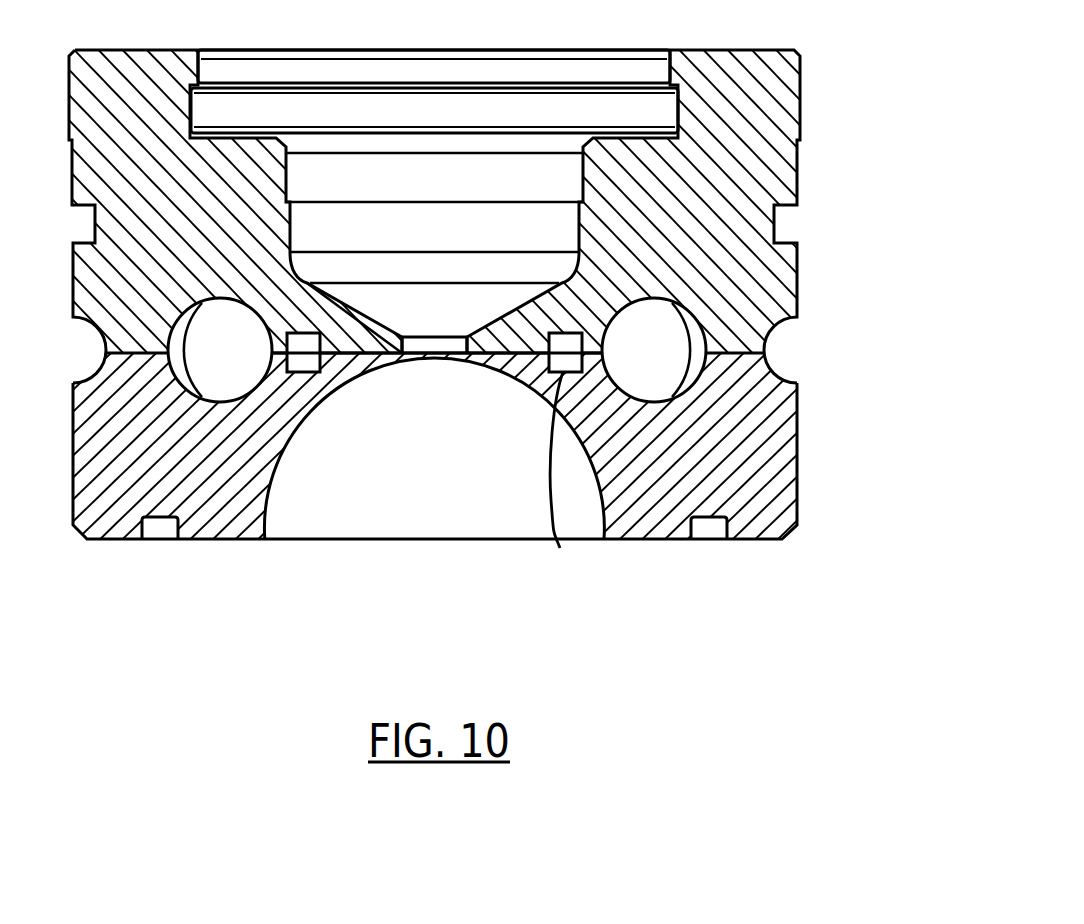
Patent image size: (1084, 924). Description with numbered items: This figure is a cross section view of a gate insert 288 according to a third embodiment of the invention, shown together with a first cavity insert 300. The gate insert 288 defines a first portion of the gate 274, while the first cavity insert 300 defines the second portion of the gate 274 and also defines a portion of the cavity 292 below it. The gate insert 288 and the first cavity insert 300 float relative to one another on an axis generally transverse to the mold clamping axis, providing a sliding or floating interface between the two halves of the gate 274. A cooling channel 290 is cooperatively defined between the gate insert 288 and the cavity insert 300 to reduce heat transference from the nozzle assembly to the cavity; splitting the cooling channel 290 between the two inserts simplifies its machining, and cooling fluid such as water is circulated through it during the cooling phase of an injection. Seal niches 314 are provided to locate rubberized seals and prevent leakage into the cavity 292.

The gate 274 is at (420, 357).
The gate insert 288 is at (798, 185).
The cooling channel 290 is at (670, 338).
The cavity 292 is at (462, 501).
The first cavity insert 300 is at (797, 433).
The seal niches 314 is at (560, 548).